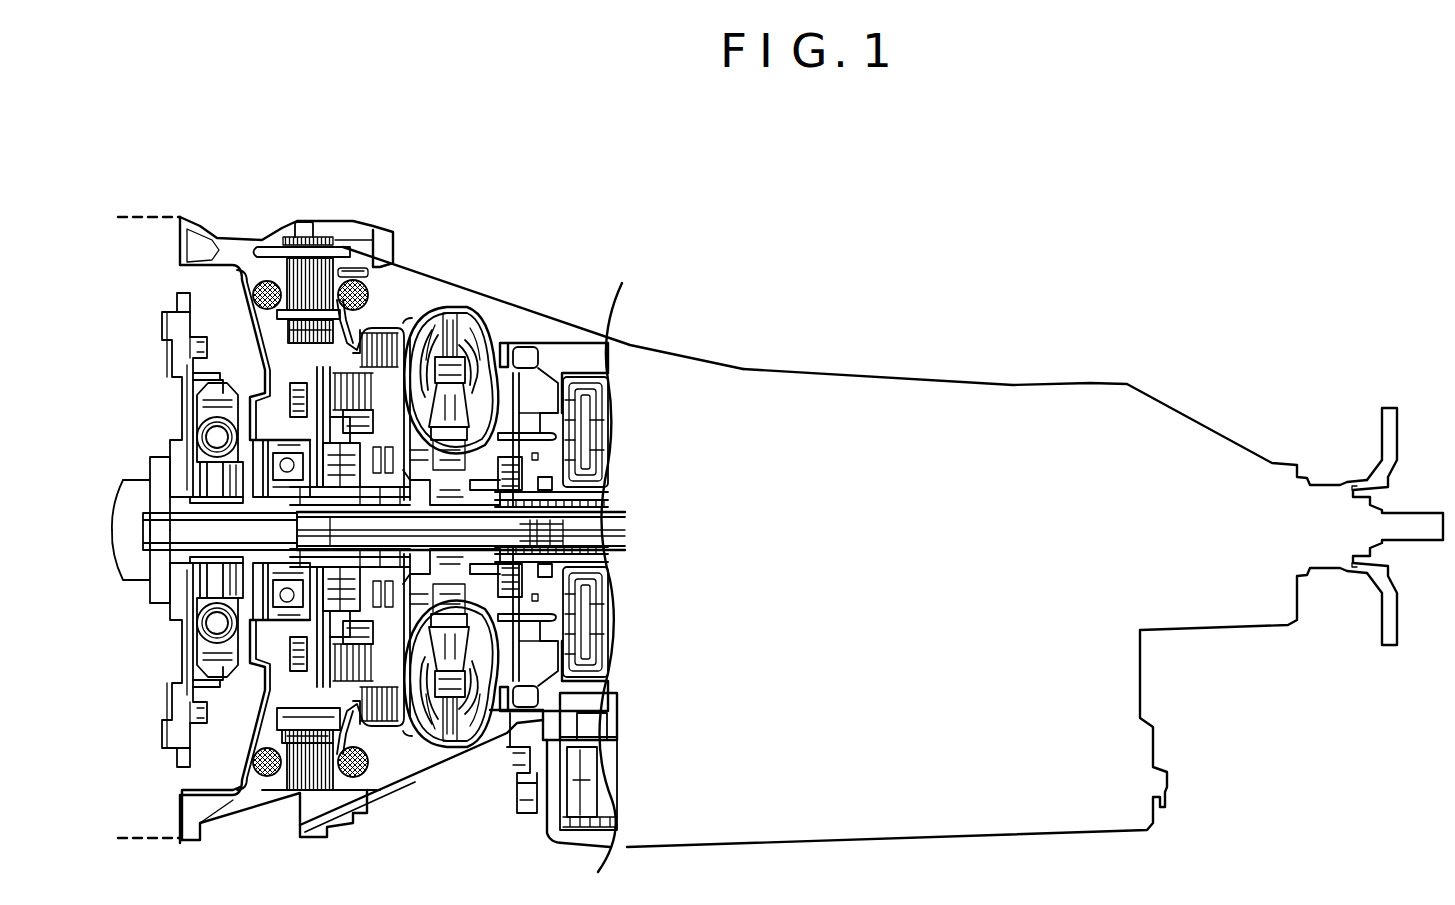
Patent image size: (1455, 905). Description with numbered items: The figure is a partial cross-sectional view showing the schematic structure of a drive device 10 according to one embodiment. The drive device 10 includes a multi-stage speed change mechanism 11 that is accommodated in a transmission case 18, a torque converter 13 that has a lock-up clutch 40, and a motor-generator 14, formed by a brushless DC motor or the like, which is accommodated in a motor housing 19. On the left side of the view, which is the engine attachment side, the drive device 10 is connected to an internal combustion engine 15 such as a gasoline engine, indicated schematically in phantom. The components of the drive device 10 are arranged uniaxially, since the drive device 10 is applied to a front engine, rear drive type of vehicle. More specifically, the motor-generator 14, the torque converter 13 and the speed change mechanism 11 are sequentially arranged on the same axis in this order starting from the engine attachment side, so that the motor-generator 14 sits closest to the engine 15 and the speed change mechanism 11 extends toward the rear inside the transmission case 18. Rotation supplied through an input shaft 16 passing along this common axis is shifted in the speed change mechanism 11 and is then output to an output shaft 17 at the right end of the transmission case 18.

The drive device 10 is at (842, 193).
The multi-stage speed change mechanism 11 is at (595, 314).
The torque converter 13 is at (446, 297).
The motor-generator 14 is at (308, 203).
The internal combustion engine 15 is at (131, 212).
The input shaft 16 is at (612, 545).
The output shaft 17 is at (1428, 513).
The transmission case 18 is at (781, 370).
The motor housing 19 is at (233, 240).
The lock-up clutch 40 is at (398, 330).